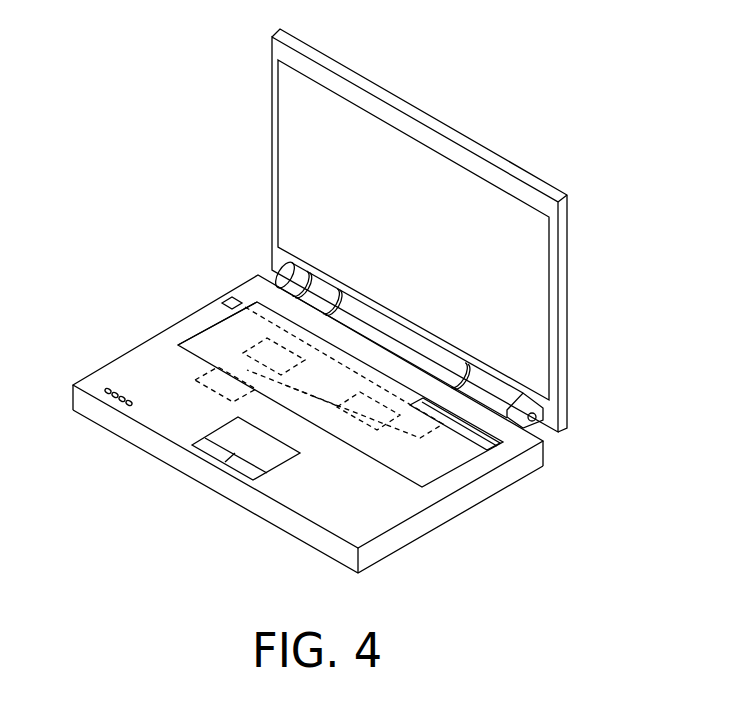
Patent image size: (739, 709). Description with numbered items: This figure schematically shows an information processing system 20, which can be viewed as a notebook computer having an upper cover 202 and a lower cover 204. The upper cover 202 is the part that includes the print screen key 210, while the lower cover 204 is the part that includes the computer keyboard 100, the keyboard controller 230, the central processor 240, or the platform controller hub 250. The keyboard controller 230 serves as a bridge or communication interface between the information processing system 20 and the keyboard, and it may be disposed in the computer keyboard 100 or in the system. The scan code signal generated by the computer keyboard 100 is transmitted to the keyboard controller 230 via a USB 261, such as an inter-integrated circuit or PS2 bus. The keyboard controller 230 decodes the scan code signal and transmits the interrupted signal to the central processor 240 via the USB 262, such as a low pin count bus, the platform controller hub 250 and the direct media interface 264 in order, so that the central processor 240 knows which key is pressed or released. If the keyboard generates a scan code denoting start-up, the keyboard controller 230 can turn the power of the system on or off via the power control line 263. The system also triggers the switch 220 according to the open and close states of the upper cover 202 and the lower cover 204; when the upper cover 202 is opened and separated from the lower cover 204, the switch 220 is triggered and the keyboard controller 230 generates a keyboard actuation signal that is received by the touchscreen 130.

The information processing system 20 is at (582, 210).
The upper cover 202 is at (466, 138).
The print screen key 210 is at (552, 308).
The lower cover 204 is at (100, 413).
The computer keyboard 100 is at (463, 466).
The touchscreen 130 is at (484, 444).
The switch 220 is at (225, 298).
The central processor 240 is at (252, 346).
The direct media interface 264 is at (247, 370).
The platform controller hub 250 is at (208, 402).
The USB 261 is at (382, 432).
The USB 262 is at (302, 400).
The power control line 263 is at (326, 391).
The keyboard controller 230 is at (430, 436).